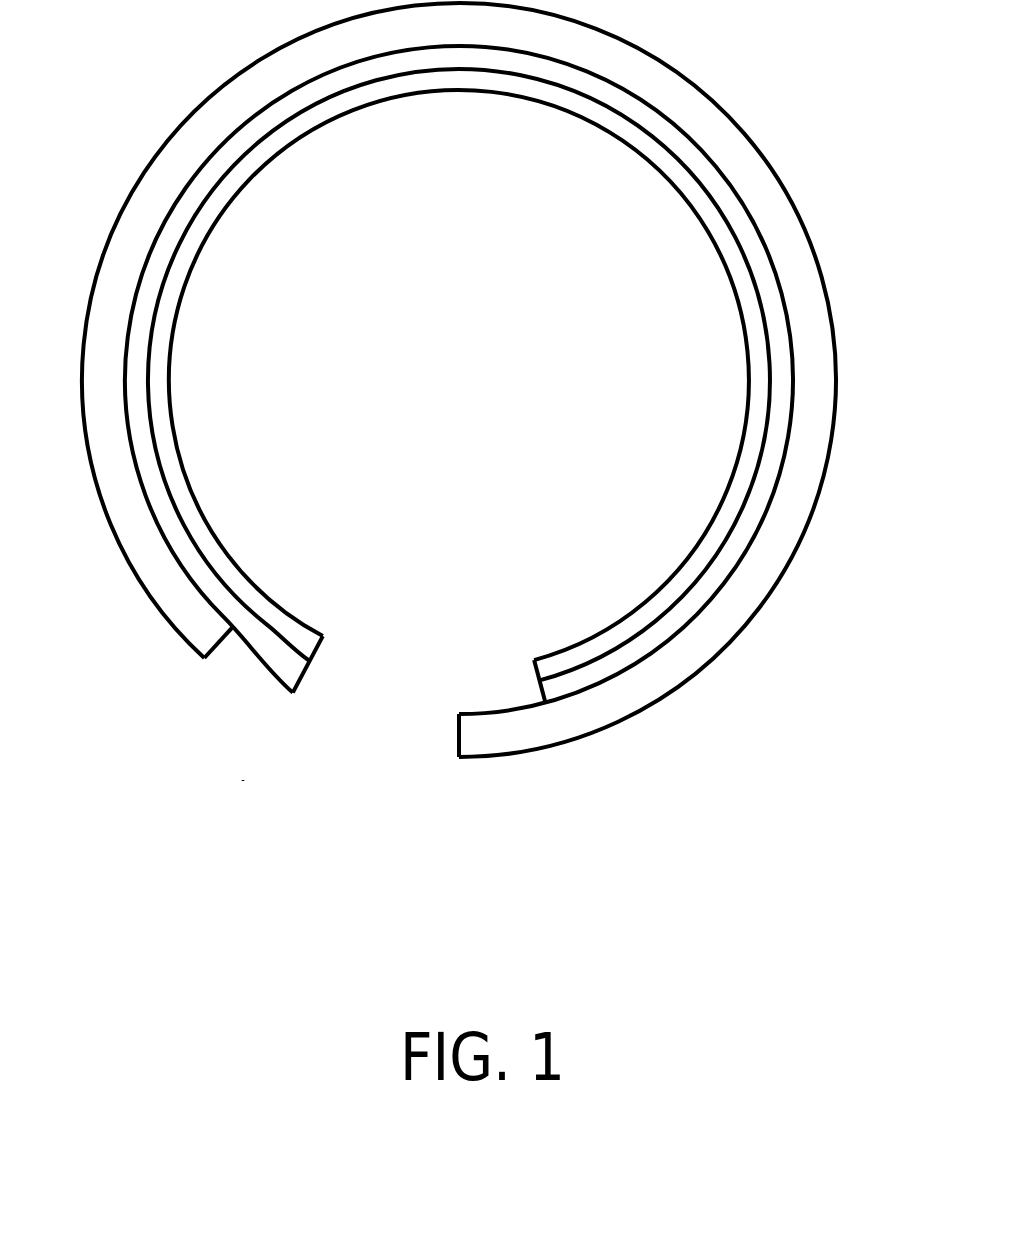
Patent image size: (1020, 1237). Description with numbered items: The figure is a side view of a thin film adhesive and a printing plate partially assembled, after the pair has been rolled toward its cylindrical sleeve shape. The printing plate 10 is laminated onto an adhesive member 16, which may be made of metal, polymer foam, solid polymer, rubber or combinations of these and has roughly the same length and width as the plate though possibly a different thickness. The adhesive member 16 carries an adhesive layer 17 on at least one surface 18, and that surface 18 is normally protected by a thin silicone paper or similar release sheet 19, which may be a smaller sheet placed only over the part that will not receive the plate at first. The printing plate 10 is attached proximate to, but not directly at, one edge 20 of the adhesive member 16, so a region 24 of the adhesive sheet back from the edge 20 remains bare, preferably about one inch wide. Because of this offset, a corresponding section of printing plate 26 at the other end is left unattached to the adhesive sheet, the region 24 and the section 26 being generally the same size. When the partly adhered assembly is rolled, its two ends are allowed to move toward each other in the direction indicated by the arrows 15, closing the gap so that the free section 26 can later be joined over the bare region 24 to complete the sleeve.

The printing plate 10 is at (770, 165).
The arrows 15 is at (523, 633).
The adhesive member 16 is at (720, 369).
The adhesive layer 17 is at (305, 672).
The surface 18 is at (566, 118).
The release sheet 19 is at (255, 672).
The edge 20 is at (297, 747).
The region 24 is at (243, 780).
The section of printing plate 26 is at (460, 760).